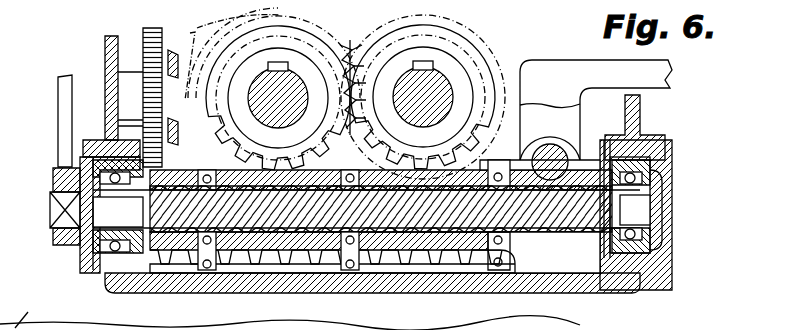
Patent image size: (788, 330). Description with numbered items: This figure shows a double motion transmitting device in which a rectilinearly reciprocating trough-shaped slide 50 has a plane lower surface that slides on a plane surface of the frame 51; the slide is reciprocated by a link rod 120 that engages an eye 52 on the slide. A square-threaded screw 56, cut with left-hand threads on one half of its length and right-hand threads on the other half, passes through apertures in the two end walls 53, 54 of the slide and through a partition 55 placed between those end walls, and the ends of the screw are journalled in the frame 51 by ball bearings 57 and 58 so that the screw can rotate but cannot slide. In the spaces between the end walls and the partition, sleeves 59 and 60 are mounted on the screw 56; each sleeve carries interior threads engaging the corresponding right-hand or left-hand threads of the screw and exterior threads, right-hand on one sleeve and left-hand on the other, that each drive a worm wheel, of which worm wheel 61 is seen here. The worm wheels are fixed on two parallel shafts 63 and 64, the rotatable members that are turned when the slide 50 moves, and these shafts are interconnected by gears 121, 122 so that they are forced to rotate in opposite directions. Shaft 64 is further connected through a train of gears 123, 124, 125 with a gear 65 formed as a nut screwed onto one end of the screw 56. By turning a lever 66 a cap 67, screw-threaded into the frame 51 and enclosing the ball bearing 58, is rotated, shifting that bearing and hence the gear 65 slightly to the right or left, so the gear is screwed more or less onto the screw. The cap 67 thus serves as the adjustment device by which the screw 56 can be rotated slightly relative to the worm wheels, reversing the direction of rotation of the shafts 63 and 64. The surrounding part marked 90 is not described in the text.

The trough-shaped slide 50 is at (420, 278).
The frame 51 is at (448, 288).
The eye 52 is at (560, 148).
The end wall 53 is at (503, 250).
The end wall 54 is at (200, 272).
The partition 55 is at (340, 268).
The square-threaded screw 56 is at (238, 268).
The ball bearing 57 is at (632, 254).
The ball bearing 58 is at (112, 258).
The sleeve 59 is at (381, 168).
The sleeve 60 is at (268, 268).
The worm wheel 61 is at (490, 93).
The shaft 63 is at (445, 85).
The shaft 64 is at (355, 50).
The gear 65 is at (140, 285).
The lever 66 is at (70, 97).
The cap 67 is at (93, 140).
The frame 90 is at (17, 298).
The link rod 120 is at (646, 78).
The gear 121 is at (380, 40).
The gear 122 is at (300, 80).
The gear 123 is at (195, 37).
The gear 124 is at (165, 70).
The gear 125 is at (157, 33).